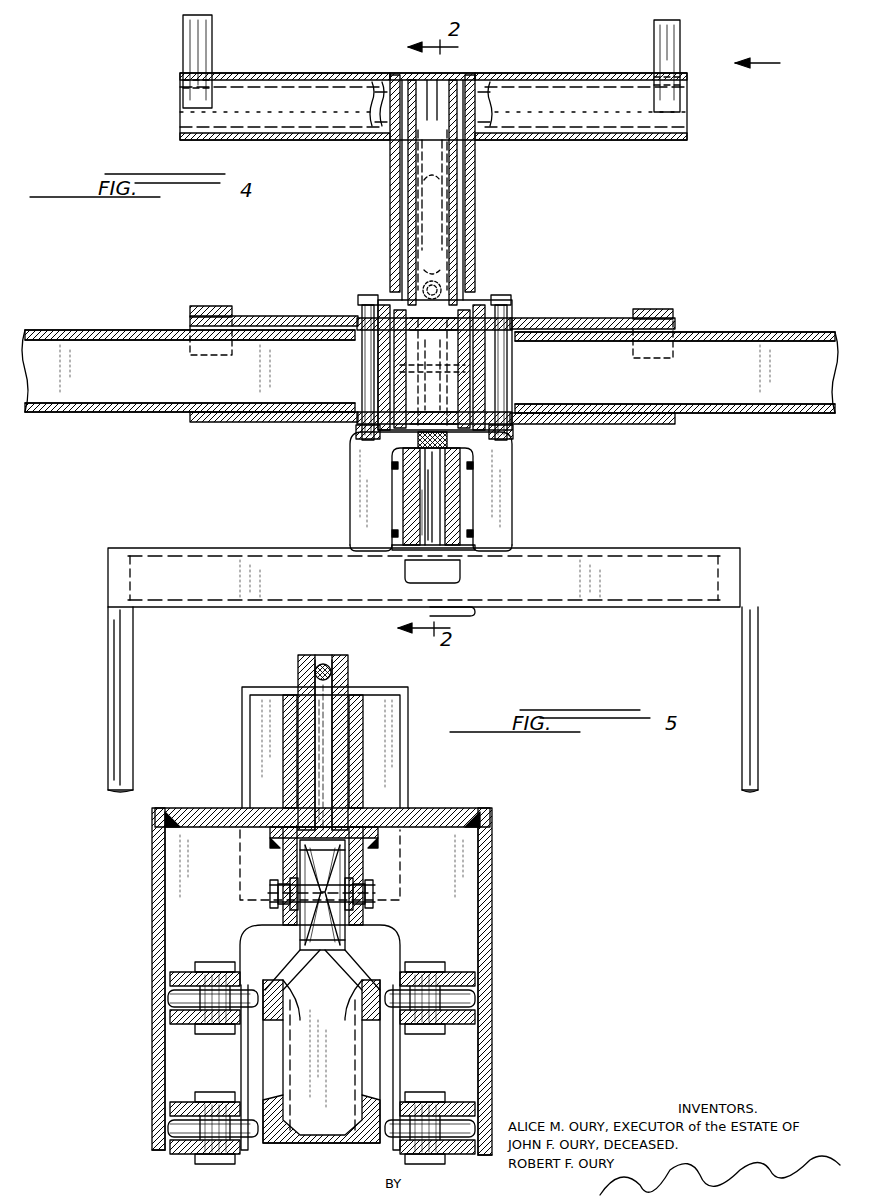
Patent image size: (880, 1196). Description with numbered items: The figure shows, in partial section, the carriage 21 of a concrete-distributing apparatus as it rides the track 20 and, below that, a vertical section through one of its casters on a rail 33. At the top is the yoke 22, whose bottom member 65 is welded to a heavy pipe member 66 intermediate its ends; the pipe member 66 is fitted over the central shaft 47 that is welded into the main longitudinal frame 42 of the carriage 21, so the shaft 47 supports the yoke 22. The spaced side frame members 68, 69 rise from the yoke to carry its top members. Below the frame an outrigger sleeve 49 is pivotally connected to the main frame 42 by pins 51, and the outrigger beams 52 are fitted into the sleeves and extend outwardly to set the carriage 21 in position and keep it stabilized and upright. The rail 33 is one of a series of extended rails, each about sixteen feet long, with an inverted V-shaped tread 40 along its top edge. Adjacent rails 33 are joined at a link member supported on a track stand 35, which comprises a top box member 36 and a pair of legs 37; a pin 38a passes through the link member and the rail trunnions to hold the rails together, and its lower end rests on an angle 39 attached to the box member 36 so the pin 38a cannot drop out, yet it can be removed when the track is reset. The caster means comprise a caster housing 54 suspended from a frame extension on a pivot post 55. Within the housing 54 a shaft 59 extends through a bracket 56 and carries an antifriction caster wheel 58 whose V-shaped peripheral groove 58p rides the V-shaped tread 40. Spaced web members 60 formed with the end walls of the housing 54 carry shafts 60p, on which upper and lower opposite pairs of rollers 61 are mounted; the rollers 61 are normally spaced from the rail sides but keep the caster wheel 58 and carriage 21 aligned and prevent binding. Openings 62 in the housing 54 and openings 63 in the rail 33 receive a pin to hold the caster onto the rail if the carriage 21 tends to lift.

In FIG. 4, the track 20 is at (105, 572).
In FIG. 4, the carriage 21 is at (628, 450).
In FIG. 5, the carriage 21 is at (585, 880).
In FIG. 4, the yoke 22 is at (702, 145).
In FIG. 4, the rail 33 is at (460, 488).
In FIG. 5, the rail 33 is at (330, 1143).
In FIG. 4, the track stand 35 is at (770, 605).
In FIG. 4, the top box member 36 is at (540, 565).
In FIG. 4, the legs 37 is at (108, 690).
In FIG. 4, the pin 38a is at (430, 500).
In FIG. 4, the angle 39 is at (450, 575).
In FIG. 5, the inverted V-shaped tread 40 is at (340, 978).
In FIG. 5, the main longitudinal frame 42 is at (408, 770).
In FIG. 4, the central shaft 47 is at (457, 203).
In FIG. 4, the outrigger sleeve 49 is at (310, 317).
In FIG. 4, the pins 51 is at (368, 295).
In FIG. 4, the outrigger beams 52 is at (160, 412).
In FIG. 4, the caster housing 54 is at (348, 452).
In FIG. 5, the caster housing 54 is at (490, 840).
In FIG. 5, the pivot post 55 is at (348, 670).
In FIG. 5, the bracket 56 is at (275, 835).
In FIG. 5, the antifriction caster wheel 58 is at (335, 868).
In FIG. 5, the V-shaped peripheral groove 58p is at (295, 798).
In FIG. 5, the shaft 59 is at (372, 905).
In FIG. 5, the web members 60 is at (478, 960).
In FIG. 5, the shafts 60p is at (213, 978).
In FIG. 5, the rollers 61 is at (170, 998).
In FIG. 5, the openings 62 is at (160, 1095).
In FIG. 5, the openings 63 is at (262, 1068).
In FIG. 4, the bottom member 65 is at (575, 140).
In FIG. 4, the pipe member 66 is at (475, 240).
In FIG. 4, the side frame member 68 is at (190, 27).
In FIG. 4, the side frame member 69 is at (672, 50).